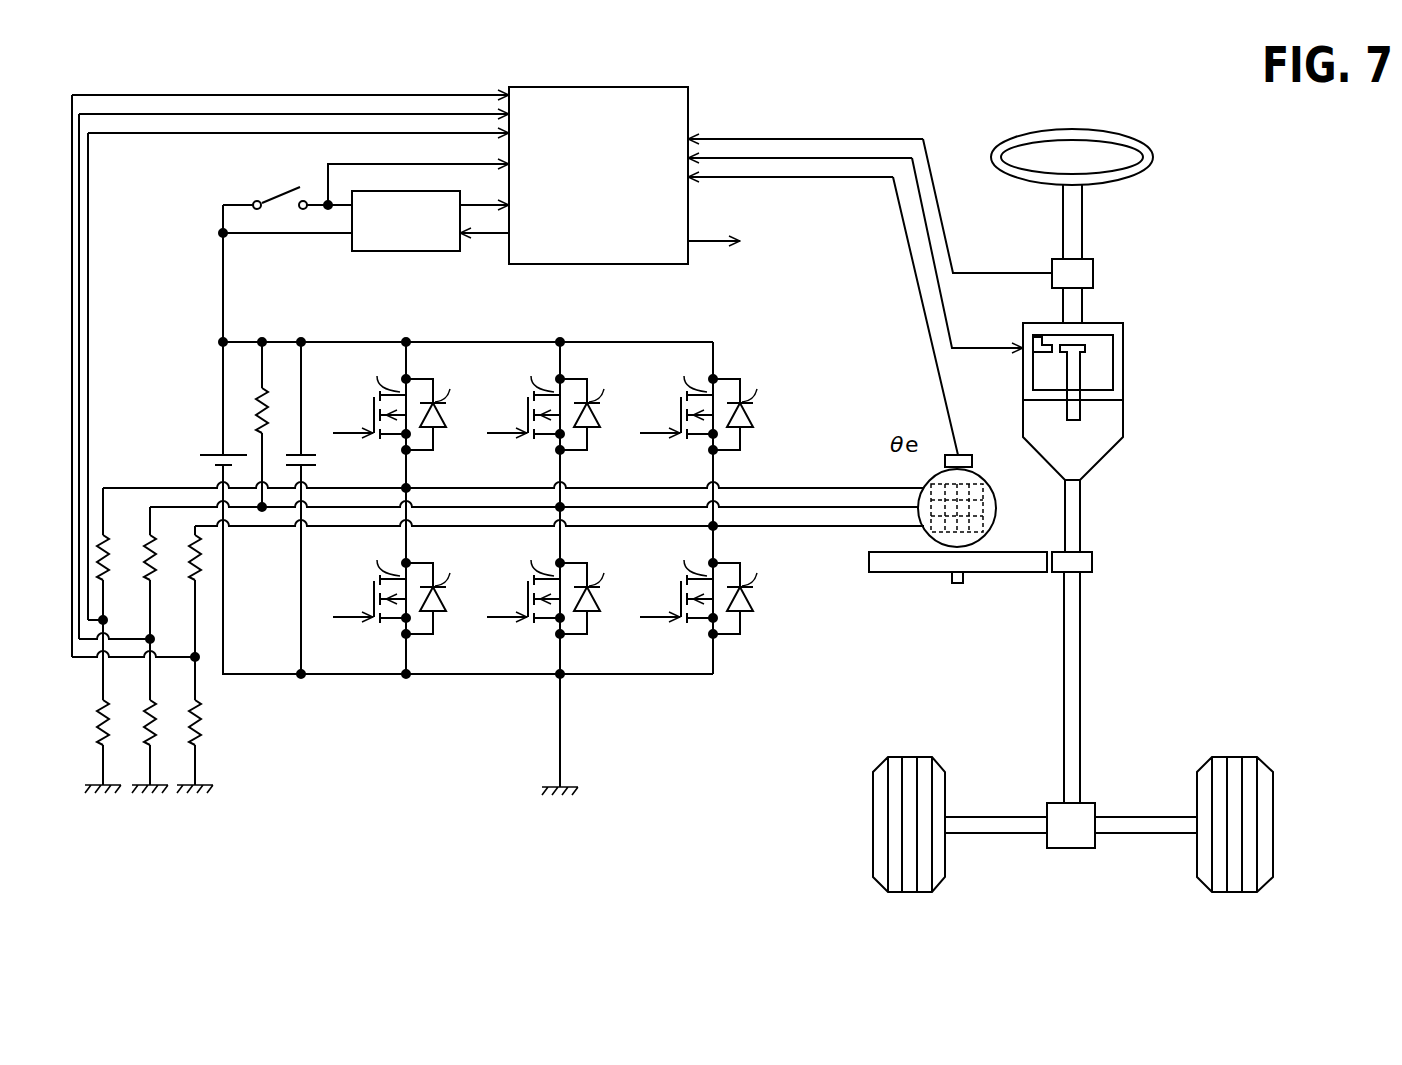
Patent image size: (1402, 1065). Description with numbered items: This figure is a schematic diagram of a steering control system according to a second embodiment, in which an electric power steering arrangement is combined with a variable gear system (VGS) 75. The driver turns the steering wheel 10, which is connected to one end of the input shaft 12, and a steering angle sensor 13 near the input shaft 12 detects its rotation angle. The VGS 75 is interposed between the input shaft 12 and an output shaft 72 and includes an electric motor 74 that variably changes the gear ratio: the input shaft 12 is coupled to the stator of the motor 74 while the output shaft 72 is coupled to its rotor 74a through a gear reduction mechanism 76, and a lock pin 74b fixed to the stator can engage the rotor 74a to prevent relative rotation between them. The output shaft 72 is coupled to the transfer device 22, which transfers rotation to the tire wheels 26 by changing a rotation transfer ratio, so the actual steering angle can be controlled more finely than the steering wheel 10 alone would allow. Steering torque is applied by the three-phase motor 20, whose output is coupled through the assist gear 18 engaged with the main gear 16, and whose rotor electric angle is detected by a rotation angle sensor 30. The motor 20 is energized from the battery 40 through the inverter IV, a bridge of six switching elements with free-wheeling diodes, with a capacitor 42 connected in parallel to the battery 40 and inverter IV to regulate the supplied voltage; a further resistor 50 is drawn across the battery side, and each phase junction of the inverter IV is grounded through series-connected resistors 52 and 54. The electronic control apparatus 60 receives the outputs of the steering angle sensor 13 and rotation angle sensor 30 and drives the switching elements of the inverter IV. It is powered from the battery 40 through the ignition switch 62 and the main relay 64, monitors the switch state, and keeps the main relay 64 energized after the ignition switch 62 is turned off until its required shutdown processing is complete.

The steering wheel 10 is at (1153, 152).
The input shaft 12 is at (1082, 222).
The steering angle sensor 13 is at (1093, 272).
The main gear 16 is at (1092, 551).
The assist gear 18 is at (1028, 551).
The multi-phase electric motor 20 is at (997, 497).
The transfer device 22 is at (1094, 803).
The tire wheels 26 is at (910, 757).
The rotation angle sensor 30 is at (972, 462).
The battery 40 is at (213, 455).
The capacitor 42 is at (316, 459).
The resistor 50 is at (262, 397).
The resistor 52 is at (95, 708).
The resistor 54 is at (113, 553).
The electronic control apparatus 60 is at (689, 105).
The ignition switch 62 is at (282, 188).
The main relay 64 is at (368, 252).
The output shaft 72 is at (1080, 493).
The electric motor 74 is at (1133, 350).
The rotor 74a is at (1078, 335).
The lock pin 74b is at (1028, 340).
The variable gear system 75 is at (1218, 373).
The gear reduction mechanism 76 is at (1123, 415).
The inverter IV is at (823, 348).